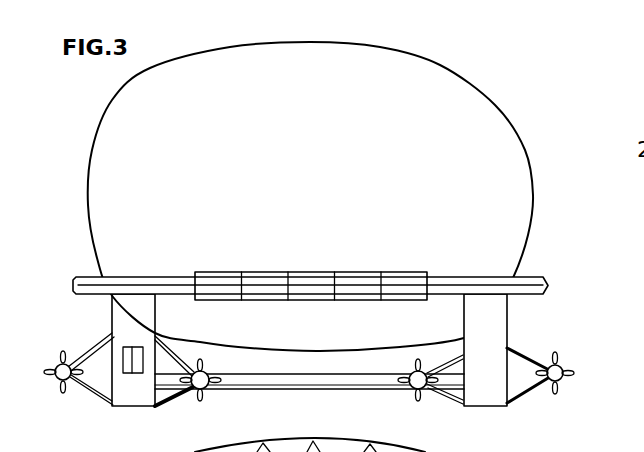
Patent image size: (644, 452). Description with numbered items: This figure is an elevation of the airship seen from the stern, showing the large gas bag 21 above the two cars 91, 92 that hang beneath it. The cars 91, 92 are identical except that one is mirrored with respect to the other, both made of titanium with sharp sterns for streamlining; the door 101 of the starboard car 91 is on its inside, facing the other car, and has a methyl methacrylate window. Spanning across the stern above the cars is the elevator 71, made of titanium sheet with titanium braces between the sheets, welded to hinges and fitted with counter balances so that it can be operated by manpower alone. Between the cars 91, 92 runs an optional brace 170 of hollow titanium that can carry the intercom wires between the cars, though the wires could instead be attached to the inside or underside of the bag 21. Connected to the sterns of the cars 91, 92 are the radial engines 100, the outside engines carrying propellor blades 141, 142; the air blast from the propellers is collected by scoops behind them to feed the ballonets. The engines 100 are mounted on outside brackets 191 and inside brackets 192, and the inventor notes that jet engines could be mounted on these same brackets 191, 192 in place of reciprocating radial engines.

The bag 21 is at (105, 125).
The elevator 71 is at (452, 278).
The car 91 is at (124, 400).
The car 92 is at (495, 367).
The engine 100 is at (57, 366).
The door 101 is at (201, 358).
The propellor blade 141 is at (63, 353).
The propellor blade 142 is at (58, 388).
The brace 170 is at (252, 378).
The outside bracket 191 is at (100, 346).
The inside bracket 192 is at (167, 357).